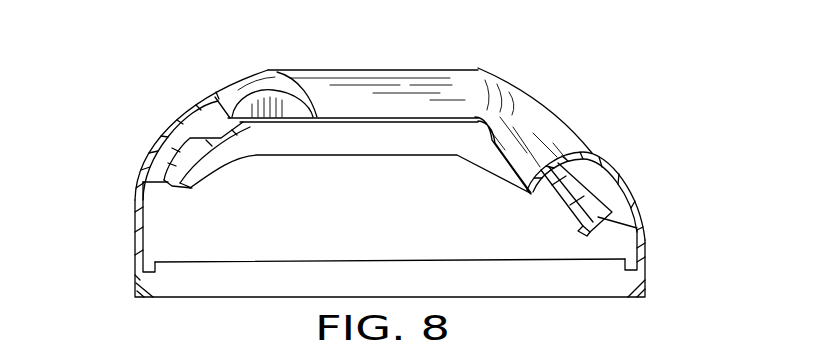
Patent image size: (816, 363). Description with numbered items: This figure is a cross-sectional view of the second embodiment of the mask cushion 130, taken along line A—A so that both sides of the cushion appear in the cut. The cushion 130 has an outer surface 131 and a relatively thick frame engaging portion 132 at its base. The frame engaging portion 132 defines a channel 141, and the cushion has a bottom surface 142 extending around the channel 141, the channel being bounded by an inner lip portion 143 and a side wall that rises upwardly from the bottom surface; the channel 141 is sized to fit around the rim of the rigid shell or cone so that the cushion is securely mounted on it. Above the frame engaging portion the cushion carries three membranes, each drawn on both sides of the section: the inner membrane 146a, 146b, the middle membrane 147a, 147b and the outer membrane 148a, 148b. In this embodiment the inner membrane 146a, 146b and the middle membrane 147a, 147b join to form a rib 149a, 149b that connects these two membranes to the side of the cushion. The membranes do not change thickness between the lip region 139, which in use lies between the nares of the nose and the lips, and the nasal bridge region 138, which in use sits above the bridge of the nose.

The cushion 130 is at (545, 58).
The outer surface of the cushion 131 is at (573, 115).
The frame engaging portion 132 is at (660, 257).
The nasal bridge region 138 is at (236, 70).
The lip region 139 is at (510, 193).
The channel 141 is at (143, 262).
The bottom surface 142 is at (145, 298).
The inner lip portion 143 is at (157, 258).
The inner membrane 146a is at (558, 207).
The inner membrane 146b is at (200, 176).
The middle membrane 147a is at (613, 173).
The middle membrane 147b is at (173, 152).
The outer membrane 148a is at (583, 150).
The outer membrane 148b is at (167, 122).
The rib 149a is at (647, 240).
The rib 149b is at (152, 188).